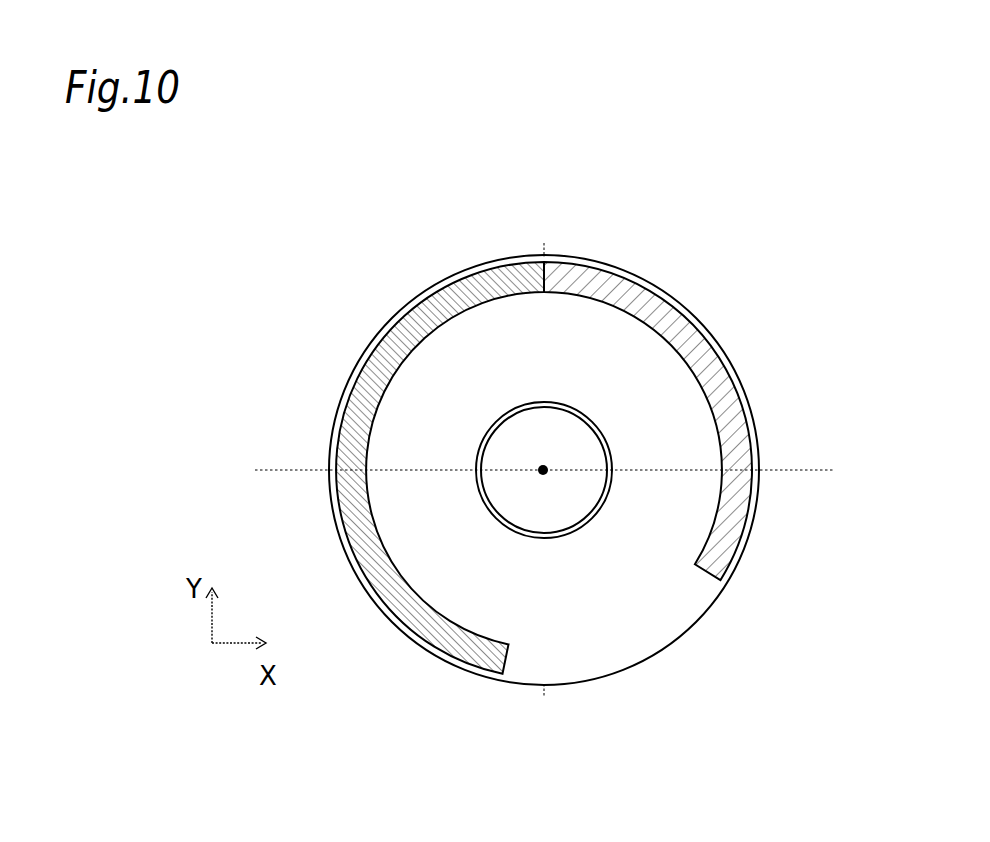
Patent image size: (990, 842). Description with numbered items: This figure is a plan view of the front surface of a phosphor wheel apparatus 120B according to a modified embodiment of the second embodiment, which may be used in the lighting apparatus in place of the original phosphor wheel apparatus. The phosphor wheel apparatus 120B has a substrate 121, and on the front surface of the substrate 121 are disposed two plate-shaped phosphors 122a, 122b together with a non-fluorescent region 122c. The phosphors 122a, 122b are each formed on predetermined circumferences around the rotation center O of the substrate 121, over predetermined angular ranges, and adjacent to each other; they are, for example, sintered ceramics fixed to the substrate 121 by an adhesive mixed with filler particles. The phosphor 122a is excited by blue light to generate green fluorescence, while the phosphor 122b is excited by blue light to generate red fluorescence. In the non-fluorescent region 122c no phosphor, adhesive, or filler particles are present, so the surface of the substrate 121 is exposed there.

The phosphor wheel apparatus 120B is at (360, 202).
The substrate 121 is at (643, 522).
The phosphor 122a is at (733, 360).
The phosphor 122b is at (366, 356).
The non-fluorescent region 122c is at (620, 638).
The rotation center O is at (542, 472).